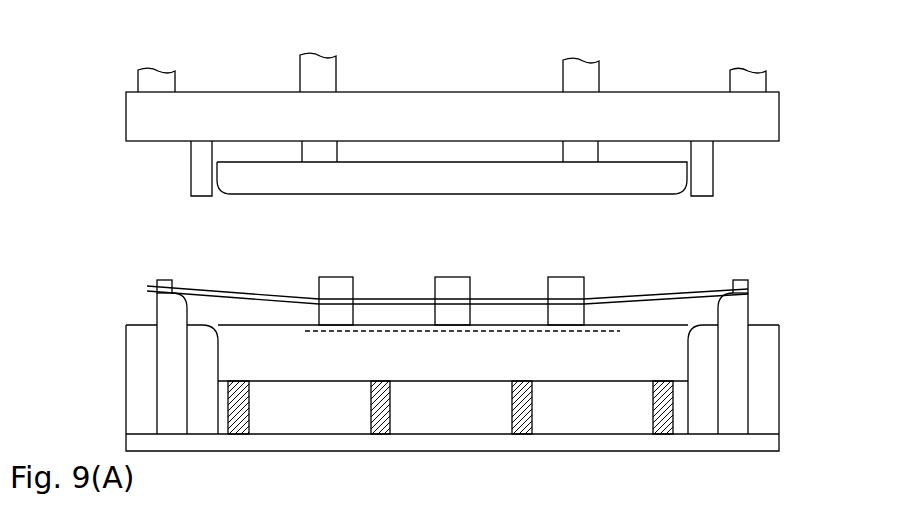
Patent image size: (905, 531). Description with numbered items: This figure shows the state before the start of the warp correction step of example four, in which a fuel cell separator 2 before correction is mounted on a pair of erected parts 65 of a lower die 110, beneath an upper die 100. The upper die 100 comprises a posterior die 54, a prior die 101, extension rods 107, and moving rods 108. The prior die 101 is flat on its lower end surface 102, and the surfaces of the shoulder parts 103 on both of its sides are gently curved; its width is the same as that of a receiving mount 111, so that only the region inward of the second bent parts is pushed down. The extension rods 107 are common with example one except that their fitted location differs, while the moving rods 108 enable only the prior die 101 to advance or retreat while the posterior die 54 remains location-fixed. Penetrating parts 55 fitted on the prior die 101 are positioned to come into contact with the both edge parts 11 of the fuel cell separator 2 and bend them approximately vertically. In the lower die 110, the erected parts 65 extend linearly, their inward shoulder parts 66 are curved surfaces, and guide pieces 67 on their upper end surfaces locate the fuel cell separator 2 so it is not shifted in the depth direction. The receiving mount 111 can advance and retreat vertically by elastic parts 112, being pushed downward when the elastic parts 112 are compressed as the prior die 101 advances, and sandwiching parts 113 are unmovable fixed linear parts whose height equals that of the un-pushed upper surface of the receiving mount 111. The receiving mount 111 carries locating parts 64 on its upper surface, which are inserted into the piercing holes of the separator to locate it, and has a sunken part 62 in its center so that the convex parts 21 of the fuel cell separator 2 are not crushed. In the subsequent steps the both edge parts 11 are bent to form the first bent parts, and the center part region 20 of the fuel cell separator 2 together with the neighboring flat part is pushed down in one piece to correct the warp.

The upper die 100 is at (113, 108).
The posterior die 54 is at (137, 117).
The extension rods 107 is at (165, 82).
The moving rods 108 is at (330, 75).
The penetrating parts 55 is at (197, 185).
The shoulder parts 103 is at (227, 184).
The prior die 101 is at (396, 185).
The lower end surface 102 is at (432, 197).
The lower die 110 is at (205, 453).
The erected parts 65 is at (175, 372).
The sandwiching parts 113 is at (193, 418).
The shoulder parts 66 is at (183, 298).
The guide pieces 67 is at (153, 278).
The receiving mount 111 is at (355, 370).
The elastic parts 112 is at (245, 436).
The locating parts 64 is at (332, 283).
The sunken part 62 is at (483, 333).
The both edge parts 11 is at (168, 291).
The center part region 20 is at (473, 307).
The convex parts 21 is at (422, 308).
The fuel cell separator 2 is at (722, 270).